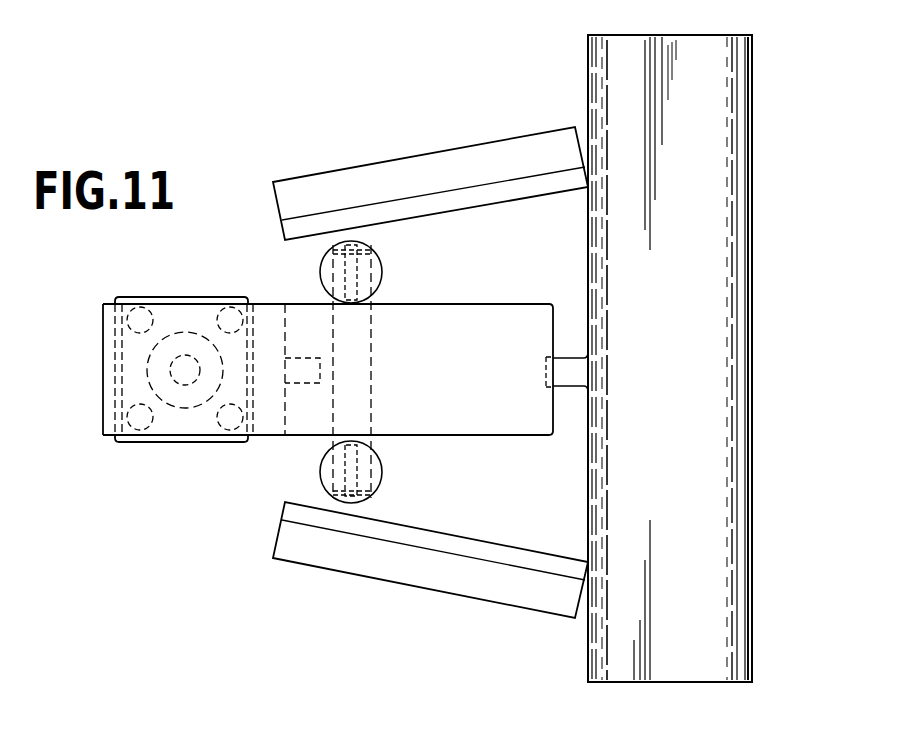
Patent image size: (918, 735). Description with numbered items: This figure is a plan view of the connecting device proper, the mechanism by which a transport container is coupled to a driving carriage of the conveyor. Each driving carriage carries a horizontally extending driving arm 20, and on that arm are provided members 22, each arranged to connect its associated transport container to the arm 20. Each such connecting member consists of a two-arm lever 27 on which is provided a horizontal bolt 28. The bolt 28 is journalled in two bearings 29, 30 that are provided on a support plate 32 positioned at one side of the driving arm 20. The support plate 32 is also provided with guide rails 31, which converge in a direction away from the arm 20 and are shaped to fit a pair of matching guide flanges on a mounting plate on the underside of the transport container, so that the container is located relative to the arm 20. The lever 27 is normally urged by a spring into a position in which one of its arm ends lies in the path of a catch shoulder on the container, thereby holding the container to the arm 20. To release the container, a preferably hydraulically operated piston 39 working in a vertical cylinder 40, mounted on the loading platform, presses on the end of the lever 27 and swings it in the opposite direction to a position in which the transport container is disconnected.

The driving arm 20 is at (712, 122).
The member 22 is at (560, 343).
The two-arm lever 27 is at (266, 436).
The horizontal bolt 28 is at (372, 393).
The bearing 29 is at (378, 262).
The bearing 30 is at (382, 471).
The guide rail 31 is at (352, 192).
The support plate 32 is at (497, 257).
The piston 39 is at (186, 382).
The vertical cylinder 40 is at (178, 340).